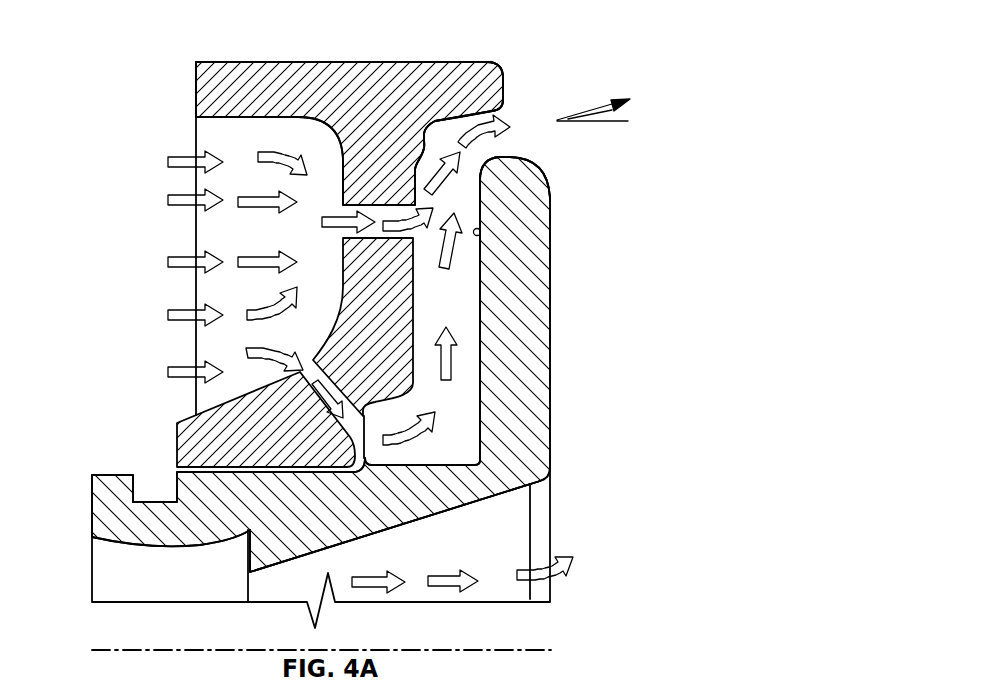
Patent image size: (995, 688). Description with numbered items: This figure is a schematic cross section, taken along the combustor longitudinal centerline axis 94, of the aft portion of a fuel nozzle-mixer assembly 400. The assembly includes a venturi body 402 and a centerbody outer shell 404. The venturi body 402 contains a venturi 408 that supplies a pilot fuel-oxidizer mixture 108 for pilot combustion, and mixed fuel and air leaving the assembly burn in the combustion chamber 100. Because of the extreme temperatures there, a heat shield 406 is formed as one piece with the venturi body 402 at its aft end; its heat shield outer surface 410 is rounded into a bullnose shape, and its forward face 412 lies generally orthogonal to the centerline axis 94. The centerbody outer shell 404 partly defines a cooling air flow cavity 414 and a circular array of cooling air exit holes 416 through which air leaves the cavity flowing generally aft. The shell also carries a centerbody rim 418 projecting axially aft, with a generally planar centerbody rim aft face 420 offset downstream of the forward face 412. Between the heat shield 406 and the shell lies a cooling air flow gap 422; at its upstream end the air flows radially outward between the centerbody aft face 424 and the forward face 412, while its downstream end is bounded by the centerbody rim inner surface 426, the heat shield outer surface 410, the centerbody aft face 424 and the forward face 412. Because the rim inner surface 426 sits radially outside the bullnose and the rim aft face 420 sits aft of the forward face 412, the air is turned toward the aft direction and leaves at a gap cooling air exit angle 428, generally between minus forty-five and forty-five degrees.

The fuel nozzle-mixer assembly 400 is at (147, 28).
The centerbody outer shell 404 is at (277, 60).
The centerbody rim 418 is at (451, 60).
The centerbody rim aft face 420 is at (505, 78).
The centerbody aft face 424 is at (414, 165).
The centerbody rim inner surface 426 is at (532, 113).
The gap cooling air exit angle 428 is at (630, 101).
The heat shield outer surface 410 is at (540, 168).
The forward face 412 is at (482, 231).
The combustion chamber 100 is at (687, 261).
The heat shield 406 is at (553, 333).
The venturi body 402 is at (553, 430).
The venturi 408 is at (442, 514).
The cooling air flow gap 422 is at (470, 309).
The cooling air flow cavity 414 is at (272, 244).
The cooling air exit holes 416 is at (343, 211).
The pilot fuel-oxidizer mixture 108 is at (560, 580).
The combustor longitudinal centerline axis 94 is at (472, 650).